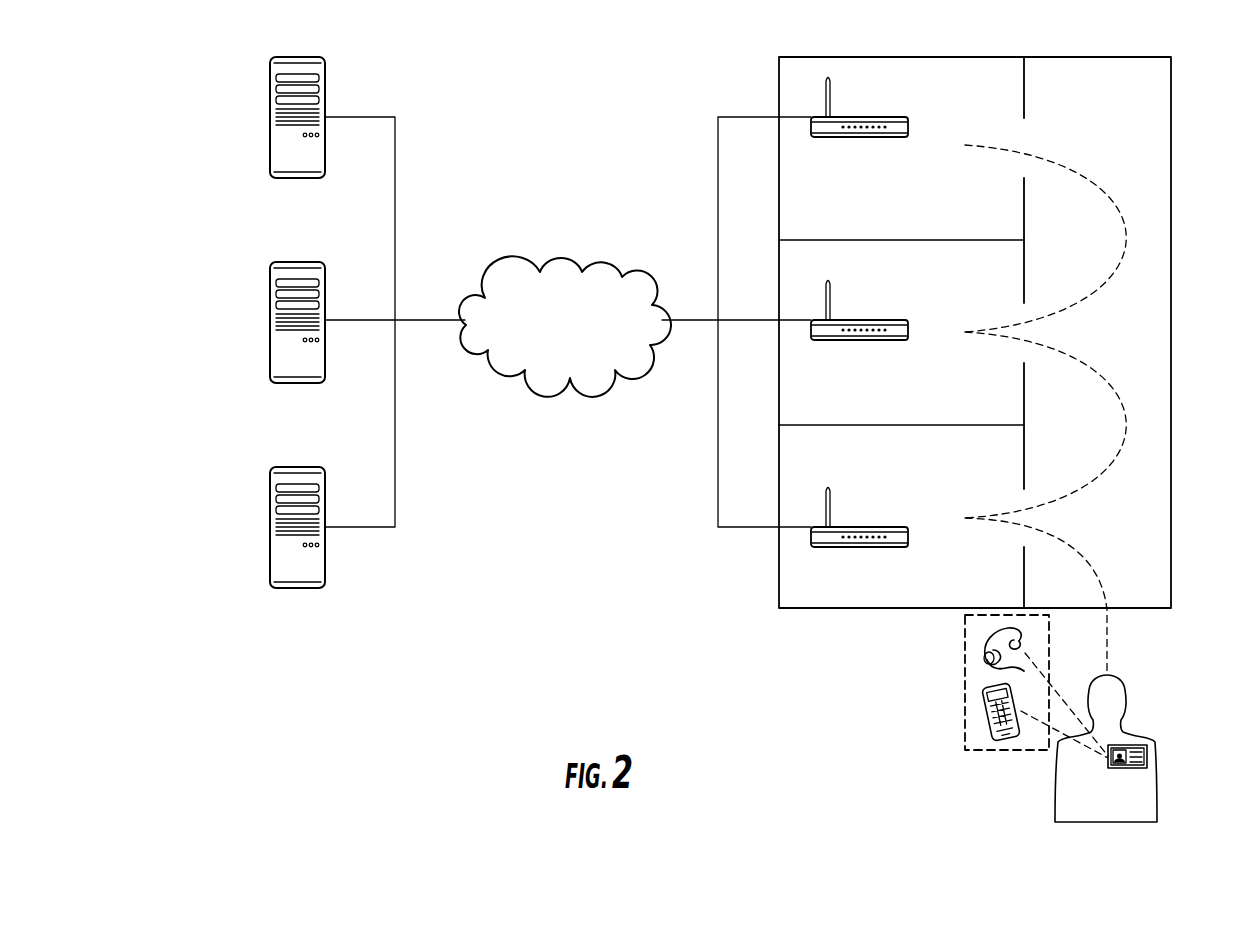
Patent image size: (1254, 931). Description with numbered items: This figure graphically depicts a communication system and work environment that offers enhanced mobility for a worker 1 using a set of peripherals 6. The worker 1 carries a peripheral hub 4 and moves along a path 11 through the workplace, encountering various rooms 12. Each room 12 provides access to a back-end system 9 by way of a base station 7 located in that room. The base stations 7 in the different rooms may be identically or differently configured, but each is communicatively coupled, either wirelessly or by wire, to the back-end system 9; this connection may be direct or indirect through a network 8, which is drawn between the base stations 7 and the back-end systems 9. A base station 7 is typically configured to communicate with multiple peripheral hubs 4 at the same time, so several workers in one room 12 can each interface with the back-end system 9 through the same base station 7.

The worker 1 is at (1129, 688).
The peripheral hub 4 is at (1152, 744).
The peripherals 6 is at (963, 683).
The base station 7 is at (882, 108).
The network 8 is at (543, 263).
The back-end system 9 is at (266, 114).
The path 11 is at (1102, 577).
The room 12 is at (987, 97).